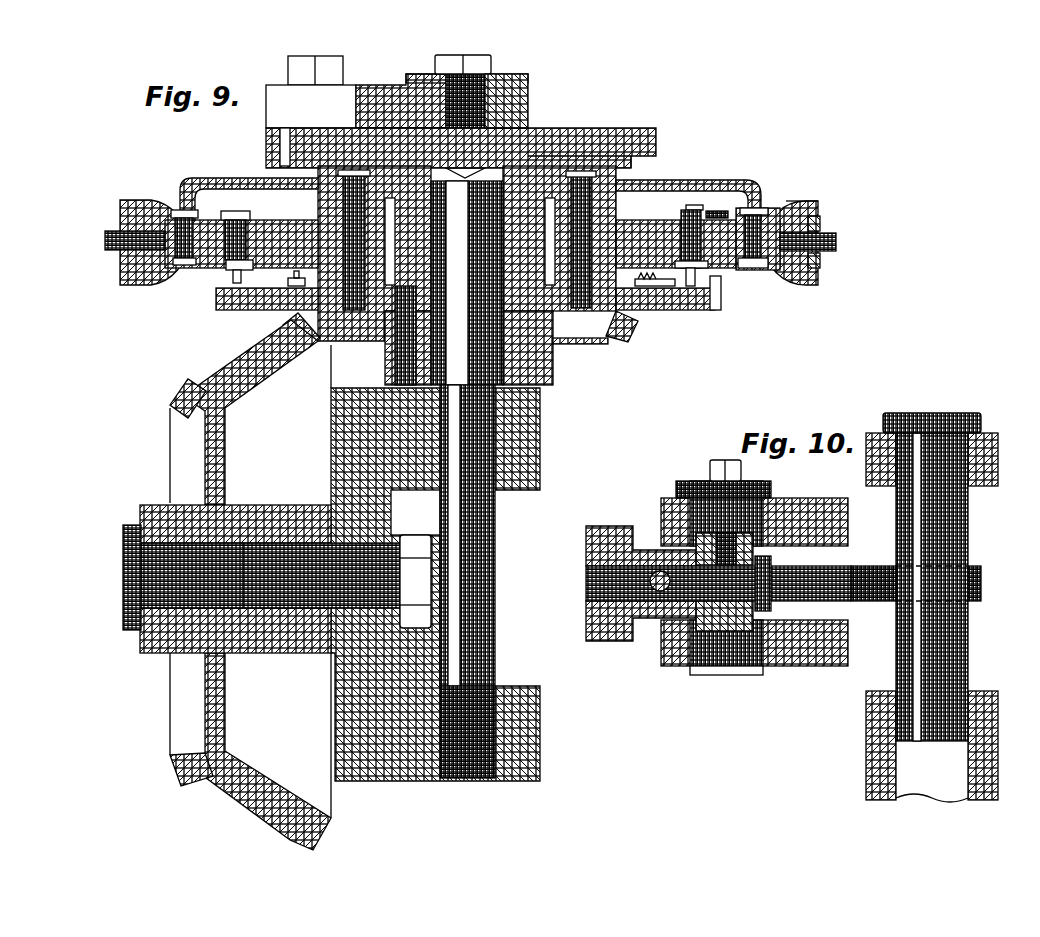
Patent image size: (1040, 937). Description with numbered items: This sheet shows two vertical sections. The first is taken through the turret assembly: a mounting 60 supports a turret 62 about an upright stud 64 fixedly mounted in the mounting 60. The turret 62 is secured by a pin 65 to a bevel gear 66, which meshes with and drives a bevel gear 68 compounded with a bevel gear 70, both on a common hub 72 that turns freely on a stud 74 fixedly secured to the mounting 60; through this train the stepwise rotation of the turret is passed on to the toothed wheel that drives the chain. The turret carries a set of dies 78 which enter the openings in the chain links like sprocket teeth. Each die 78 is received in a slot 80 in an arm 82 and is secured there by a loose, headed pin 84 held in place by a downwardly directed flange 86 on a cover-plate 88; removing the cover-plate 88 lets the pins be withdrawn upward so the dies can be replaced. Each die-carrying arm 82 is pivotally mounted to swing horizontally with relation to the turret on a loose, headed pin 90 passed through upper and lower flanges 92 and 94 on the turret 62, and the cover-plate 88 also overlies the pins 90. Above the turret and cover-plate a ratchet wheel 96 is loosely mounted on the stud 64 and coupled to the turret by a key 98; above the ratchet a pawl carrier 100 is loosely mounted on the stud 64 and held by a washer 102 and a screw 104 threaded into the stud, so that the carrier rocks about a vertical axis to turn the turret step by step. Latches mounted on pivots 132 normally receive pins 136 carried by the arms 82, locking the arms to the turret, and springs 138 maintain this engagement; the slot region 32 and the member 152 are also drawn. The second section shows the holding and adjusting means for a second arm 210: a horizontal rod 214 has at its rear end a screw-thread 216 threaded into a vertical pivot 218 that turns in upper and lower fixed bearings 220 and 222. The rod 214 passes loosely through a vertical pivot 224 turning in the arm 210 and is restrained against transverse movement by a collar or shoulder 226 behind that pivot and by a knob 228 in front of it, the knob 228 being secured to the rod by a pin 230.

In FIG. 9, the slot 32 is at (812, 212).
In FIG. 9, the mounting 60 is at (330, 437).
In FIG. 9, the turret 62 is at (407, 240).
In FIG. 9, the upright stud 64 is at (497, 103).
In FIG. 9, the pin 65 is at (392, 357).
In FIG. 9, the bevel gear 66 is at (612, 333).
In FIG. 9, the bevel gear 68 is at (285, 328).
In FIG. 9, the bevel gear 70 is at (178, 388).
In FIG. 9, the common hub 72 is at (148, 497).
In FIG. 9, the stud 74 is at (118, 549).
In FIG. 9, the die 78 is at (783, 200).
In FIG. 9, the slot 80 is at (152, 262).
In FIG. 9, the arm 82 is at (193, 252).
In FIG. 9, the headed pin 84 is at (172, 210).
In FIG. 9, the flange 86 is at (178, 192).
In FIG. 9, the cover-plate 88 is at (183, 176).
In FIG. 9, the headed pin 90 is at (348, 210).
In FIG. 9, the upper flange 92 is at (468, 248).
In FIG. 9, the lower flange 94 is at (255, 295).
In FIG. 9, the ratchet wheel 96 is at (598, 130).
In FIG. 9, the key 98 is at (578, 138).
In FIG. 9, the pawl carrier 100 is at (520, 86).
In FIG. 9, the washer 102 is at (520, 69).
In FIG. 9, the screw 104 is at (478, 55).
In FIG. 9, the pivot 132 is at (713, 278).
In FIG. 9, the pin 136 is at (690, 280).
In FIG. 9, the spring 138 is at (643, 280).
In FIG. 9, the shaft 152 is at (97, 237).
In FIG. 10, the second arm 210 is at (807, 482).
In FIG. 10, the horizontal rod 214 is at (578, 570).
In FIG. 10, the screw-thread 216 is at (857, 560).
In FIG. 10, the vertical pivot 218 is at (952, 518).
In FIG. 10, the upper fixed bearing 220 is at (983, 452).
In FIG. 10, the lower fixed bearing 222 is at (980, 718).
In FIG. 10, the vertical pivot 224 is at (727, 647).
In FIG. 10, the collar or shoulder 226 is at (763, 553).
In FIG. 10, the knob 228 is at (600, 518).
In FIG. 10, the pin 230 is at (646, 619).